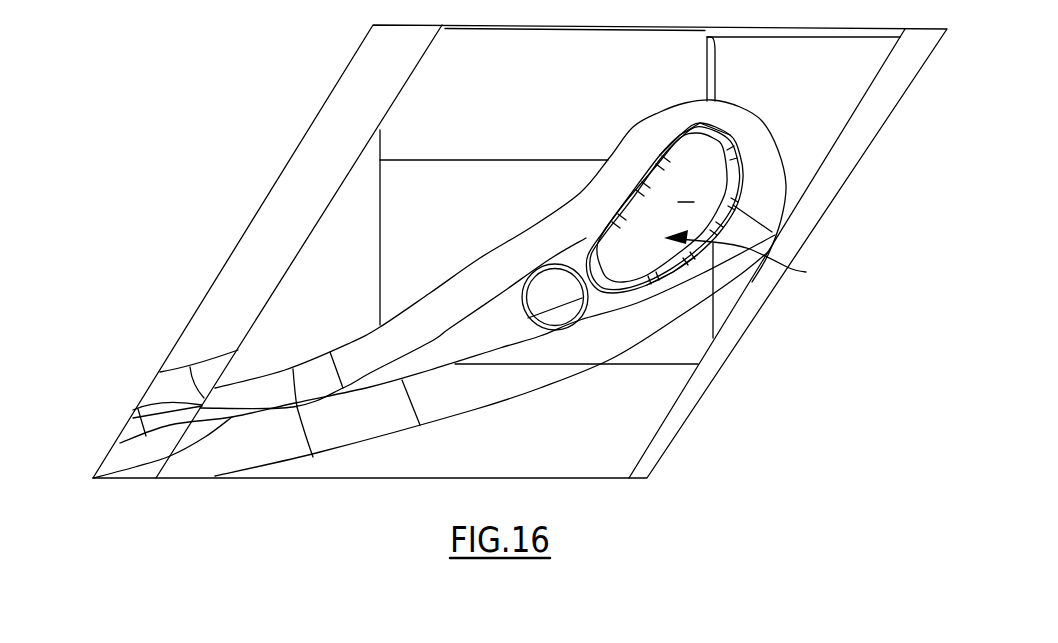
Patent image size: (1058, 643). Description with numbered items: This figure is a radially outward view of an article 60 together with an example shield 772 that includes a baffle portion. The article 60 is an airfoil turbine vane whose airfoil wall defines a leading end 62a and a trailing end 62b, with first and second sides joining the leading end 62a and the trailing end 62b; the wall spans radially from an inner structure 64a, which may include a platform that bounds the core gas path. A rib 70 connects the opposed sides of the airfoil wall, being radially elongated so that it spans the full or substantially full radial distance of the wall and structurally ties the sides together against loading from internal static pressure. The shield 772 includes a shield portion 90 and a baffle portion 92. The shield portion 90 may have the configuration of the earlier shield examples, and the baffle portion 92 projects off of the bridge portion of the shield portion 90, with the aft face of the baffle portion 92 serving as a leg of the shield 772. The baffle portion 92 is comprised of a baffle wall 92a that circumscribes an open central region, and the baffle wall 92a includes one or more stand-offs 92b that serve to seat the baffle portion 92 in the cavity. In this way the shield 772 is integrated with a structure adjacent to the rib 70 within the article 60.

The article 60 is at (140, 312).
The leading end 62a is at (505, 305).
The trailing end 62b is at (518, 332).
The inner structure 64a is at (656, 463).
The rib 70 is at (578, 318).
The shield portion 90 is at (545, 280).
The baffle portion 92 is at (742, 198).
The baffle wall 92a is at (726, 156).
The stand-off 92b is at (658, 277).
The shield 772 is at (758, 259).